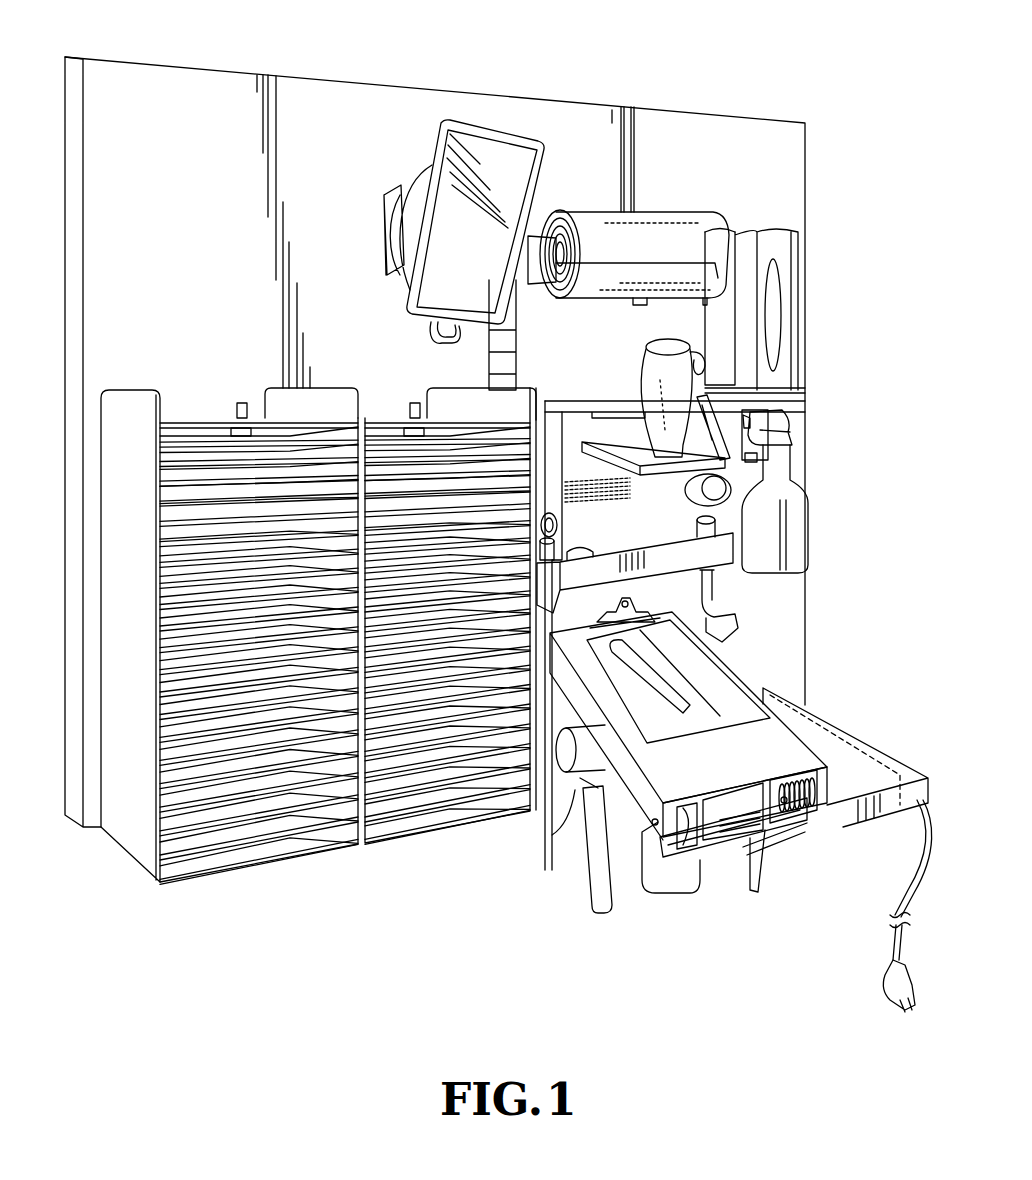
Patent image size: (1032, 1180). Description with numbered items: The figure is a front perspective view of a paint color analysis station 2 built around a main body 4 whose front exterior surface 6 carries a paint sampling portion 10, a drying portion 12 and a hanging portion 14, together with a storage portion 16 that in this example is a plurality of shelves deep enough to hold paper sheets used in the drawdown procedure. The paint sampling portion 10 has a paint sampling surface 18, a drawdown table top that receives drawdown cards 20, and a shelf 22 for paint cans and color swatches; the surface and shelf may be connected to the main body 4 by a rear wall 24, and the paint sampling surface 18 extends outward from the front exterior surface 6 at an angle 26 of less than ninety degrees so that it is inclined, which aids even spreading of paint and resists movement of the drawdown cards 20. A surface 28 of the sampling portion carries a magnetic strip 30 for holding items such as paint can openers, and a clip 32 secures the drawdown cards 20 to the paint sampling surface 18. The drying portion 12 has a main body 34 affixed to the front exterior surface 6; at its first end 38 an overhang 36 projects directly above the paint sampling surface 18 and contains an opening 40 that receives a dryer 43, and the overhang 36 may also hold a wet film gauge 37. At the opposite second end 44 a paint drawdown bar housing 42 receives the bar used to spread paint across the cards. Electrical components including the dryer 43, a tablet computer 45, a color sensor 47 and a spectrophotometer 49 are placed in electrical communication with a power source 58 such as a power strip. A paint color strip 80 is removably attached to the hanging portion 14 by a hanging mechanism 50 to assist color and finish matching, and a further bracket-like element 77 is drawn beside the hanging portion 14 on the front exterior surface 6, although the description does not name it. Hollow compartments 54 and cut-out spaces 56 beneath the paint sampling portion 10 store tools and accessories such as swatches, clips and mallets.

The paint color analysis station 2 is at (776, 48).
The main body 4 is at (155, 101).
The front exterior surface 6 is at (298, 105).
The paint sampling portion 10 is at (800, 735).
The drying portion 12 is at (745, 548).
The hanging portion 14 is at (615, 195).
The storage portion 16 is at (103, 635).
The paint sampling surface 18 is at (742, 858).
The drawdown cards 20 is at (715, 668).
The shelf 22 is at (880, 760).
The rear wall 24 is at (545, 722).
The angle 26 is at (562, 645).
The surface 28 is at (680, 890).
The magnetic strip 30 is at (720, 888).
The clip 32 is at (645, 660).
The main body of the drying portion 34 is at (571, 420).
The overhang 36 is at (792, 458).
The wet film gauge 37 is at (790, 422).
The first end 38 is at (575, 398).
The opening 40 is at (655, 470).
The paint drawdown bar housing 42 is at (705, 563).
The dryer 43 is at (490, 123).
The second end 44 is at (730, 583).
The tablet computer 45 is at (692, 340).
The color sensor 47 is at (735, 505).
The spectrophotometer 49 is at (553, 514).
The hanging mechanism 50 is at (414, 403).
The hollow compartments 54 is at (822, 790).
The cut-out spaces 56 is at (600, 792).
The power source 58 is at (913, 818).
The roll bracket 77 is at (800, 243).
The paint color strip 80 is at (512, 334).